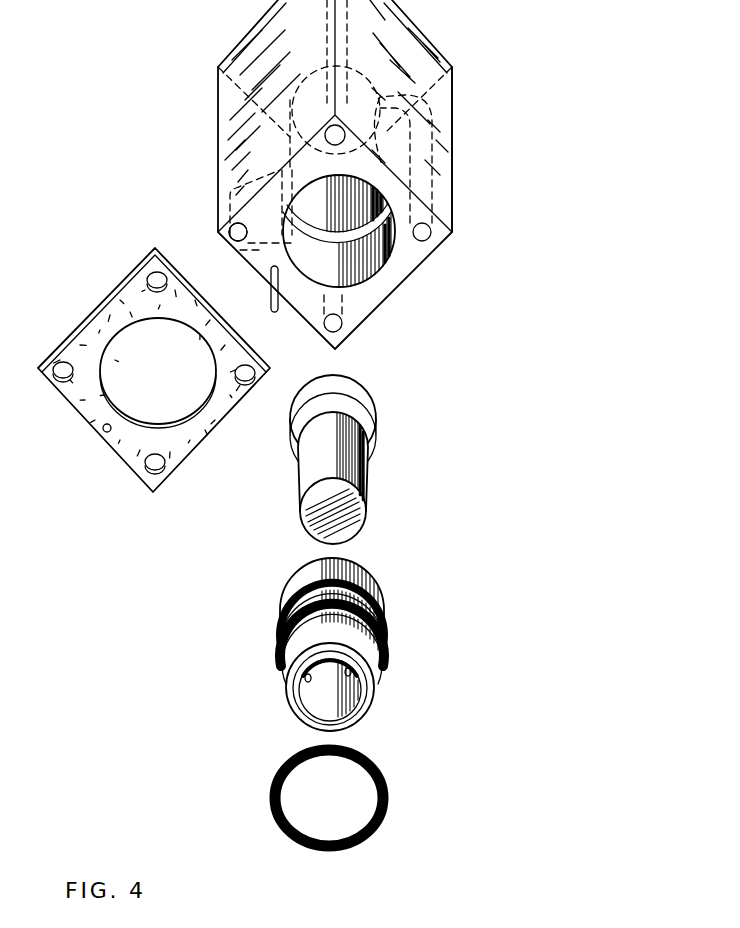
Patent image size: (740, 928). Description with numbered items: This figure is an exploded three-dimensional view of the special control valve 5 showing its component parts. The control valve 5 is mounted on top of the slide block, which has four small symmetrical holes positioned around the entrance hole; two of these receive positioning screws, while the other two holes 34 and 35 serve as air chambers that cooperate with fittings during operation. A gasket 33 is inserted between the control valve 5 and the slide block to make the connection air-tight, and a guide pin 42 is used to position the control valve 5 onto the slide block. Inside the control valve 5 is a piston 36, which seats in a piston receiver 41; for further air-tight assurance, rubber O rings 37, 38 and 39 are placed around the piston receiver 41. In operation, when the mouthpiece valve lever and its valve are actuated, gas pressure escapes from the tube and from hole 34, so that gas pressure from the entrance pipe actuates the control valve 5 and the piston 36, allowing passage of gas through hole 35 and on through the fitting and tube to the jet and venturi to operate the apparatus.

The control valve 5 is at (418, 58).
The gasket 33 is at (120, 310).
The hole 34 is at (425, 202).
The hole 35 is at (240, 241).
The piston 36 is at (358, 492).
The rubber O ring 37 is at (390, 797).
The rubber O ring 38 is at (390, 668).
The rubber O ring 39 is at (388, 620).
The piston receiver 41 is at (370, 583).
The guide pin 42 is at (270, 293).